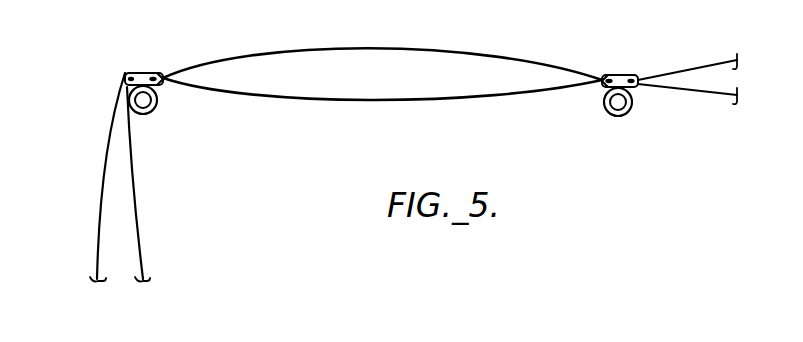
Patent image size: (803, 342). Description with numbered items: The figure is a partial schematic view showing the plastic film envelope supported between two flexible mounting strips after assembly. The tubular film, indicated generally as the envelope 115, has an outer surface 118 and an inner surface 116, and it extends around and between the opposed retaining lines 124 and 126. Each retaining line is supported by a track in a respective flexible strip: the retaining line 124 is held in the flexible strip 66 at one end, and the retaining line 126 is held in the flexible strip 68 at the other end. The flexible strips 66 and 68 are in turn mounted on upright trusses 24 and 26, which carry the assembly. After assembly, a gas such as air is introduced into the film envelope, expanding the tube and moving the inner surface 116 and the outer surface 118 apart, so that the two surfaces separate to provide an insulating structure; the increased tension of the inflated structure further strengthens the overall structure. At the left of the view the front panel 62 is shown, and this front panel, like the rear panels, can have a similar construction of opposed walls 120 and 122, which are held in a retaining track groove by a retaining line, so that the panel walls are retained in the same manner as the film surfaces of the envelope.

The front panel 62 is at (113, 177).
The flexible strip 66 is at (143, 72).
The flexible strip 68 is at (659, 52).
The upright truss 24 is at (151, 112).
The upright truss 26 is at (618, 117).
The panel body 115 is at (382, 70).
The inner surface 116 is at (350, 102).
The outer surface 118 is at (322, 47).
The opposed wall 120 is at (100, 219).
The opposed wall 122 is at (139, 204).
The retaining line 124 is at (165, 73).
The retaining line 126 is at (616, 56).